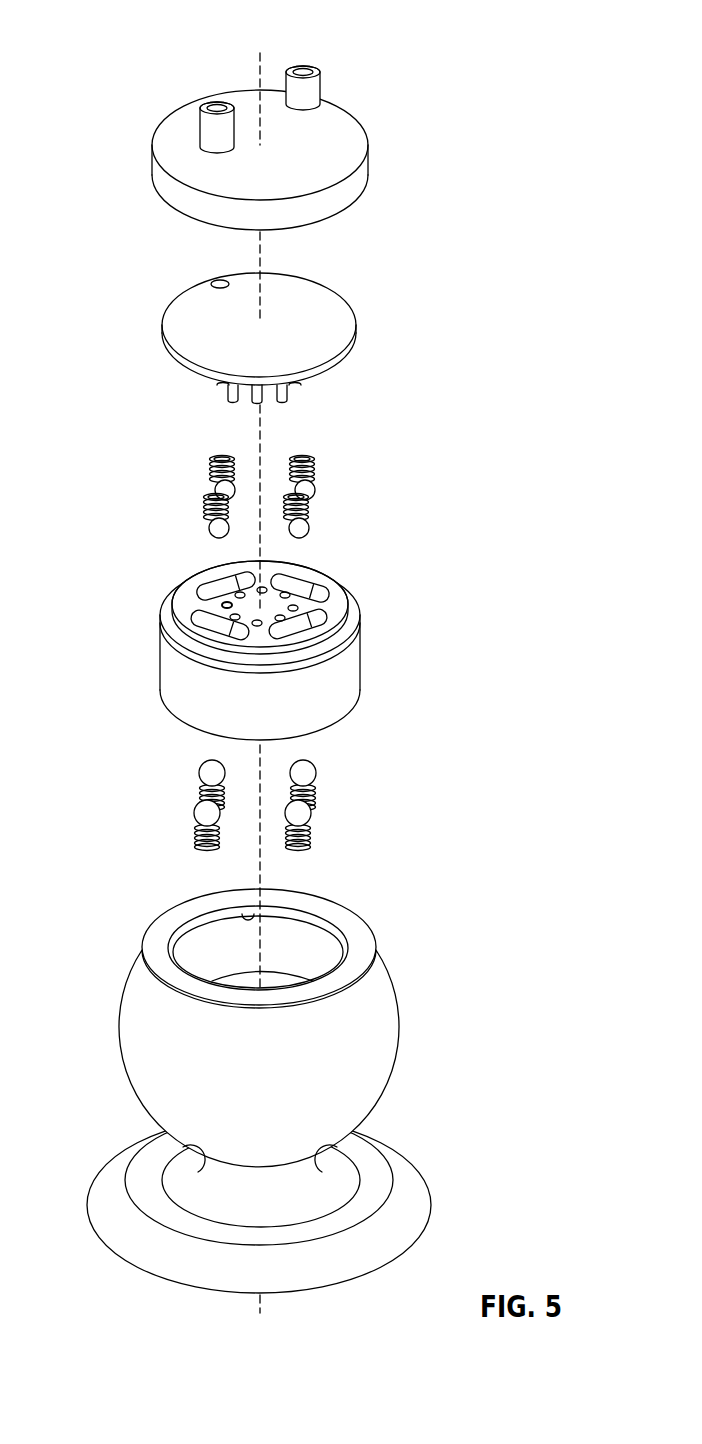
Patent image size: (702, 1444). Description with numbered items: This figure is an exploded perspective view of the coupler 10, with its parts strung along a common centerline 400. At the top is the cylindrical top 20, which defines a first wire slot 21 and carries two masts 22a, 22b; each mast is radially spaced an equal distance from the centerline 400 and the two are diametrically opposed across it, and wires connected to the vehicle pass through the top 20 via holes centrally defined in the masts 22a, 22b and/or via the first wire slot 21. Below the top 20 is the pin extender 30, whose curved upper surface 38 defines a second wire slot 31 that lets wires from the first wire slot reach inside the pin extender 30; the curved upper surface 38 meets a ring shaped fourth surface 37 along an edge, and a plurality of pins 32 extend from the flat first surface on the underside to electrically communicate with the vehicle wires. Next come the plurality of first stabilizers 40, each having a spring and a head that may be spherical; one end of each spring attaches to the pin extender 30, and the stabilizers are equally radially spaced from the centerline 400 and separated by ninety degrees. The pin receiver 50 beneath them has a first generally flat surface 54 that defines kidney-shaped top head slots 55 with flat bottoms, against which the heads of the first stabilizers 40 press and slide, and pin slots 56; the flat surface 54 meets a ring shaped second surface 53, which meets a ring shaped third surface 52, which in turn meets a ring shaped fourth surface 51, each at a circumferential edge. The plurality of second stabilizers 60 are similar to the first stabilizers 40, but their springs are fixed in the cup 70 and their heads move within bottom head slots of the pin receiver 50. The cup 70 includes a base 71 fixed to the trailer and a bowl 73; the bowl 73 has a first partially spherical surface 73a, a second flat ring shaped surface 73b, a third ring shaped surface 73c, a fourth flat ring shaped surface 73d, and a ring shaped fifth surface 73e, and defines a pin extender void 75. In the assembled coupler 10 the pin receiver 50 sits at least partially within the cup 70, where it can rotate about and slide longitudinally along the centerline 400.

The coupler 10 is at (290, 662).
The top 20 is at (268, 134).
The first wire slot 21 is at (193, 107).
The mast 22a is at (310, 67).
The mast 22b is at (210, 133).
The pin extender 30 is at (292, 336).
The second wire slot 31 is at (217, 283).
The pins 32 is at (282, 402).
The ring shaped fourth surface 37 is at (338, 357).
The curved upper surface 38 is at (320, 303).
The first stabilizers 40 is at (326, 487).
The pin receiver 50 is at (268, 637).
The ring shaped fourth surface 51 is at (170, 685).
The ring shaped third surface 52 is at (246, 594).
The ring shaped second surface 53 is at (328, 640).
The first generally flat surface 54 is at (277, 573).
The top head slots 55 is at (218, 587).
The pin slots 56 is at (223, 603).
The second stabilizers 60 is at (328, 809).
The cup 70 is at (266, 1076).
The base 71 is at (286, 1204).
The bowl 73 is at (248, 1013).
The first partially spherical surface 73a is at (138, 1065).
The second flat ring shaped surface 73b is at (363, 943).
The third ring shaped surface 73c is at (218, 913).
The fourth flat ring shaped surface 73d is at (252, 914).
The ring shaped fifth surface 73e is at (192, 958).
The pin extender void 75 is at (308, 940).
The centerline 400 is at (263, 57).